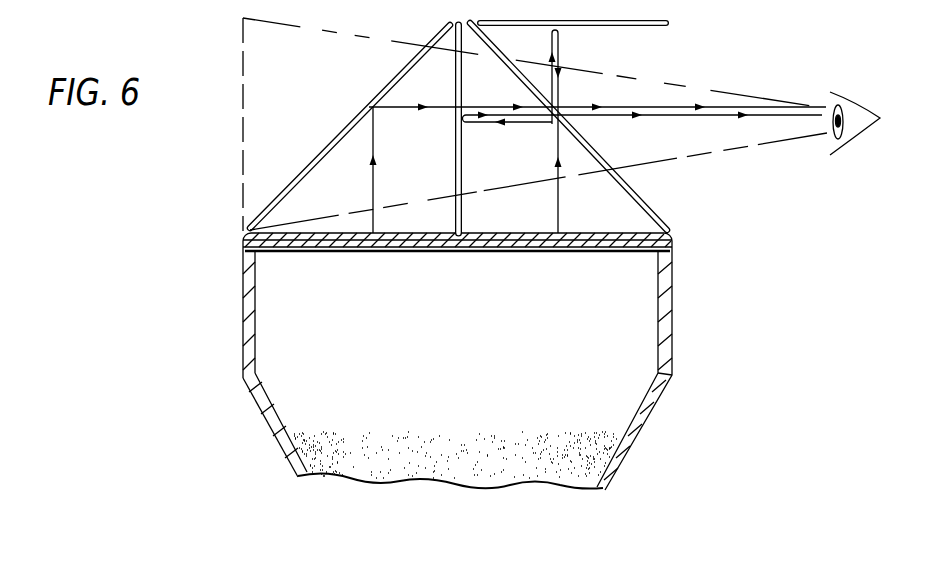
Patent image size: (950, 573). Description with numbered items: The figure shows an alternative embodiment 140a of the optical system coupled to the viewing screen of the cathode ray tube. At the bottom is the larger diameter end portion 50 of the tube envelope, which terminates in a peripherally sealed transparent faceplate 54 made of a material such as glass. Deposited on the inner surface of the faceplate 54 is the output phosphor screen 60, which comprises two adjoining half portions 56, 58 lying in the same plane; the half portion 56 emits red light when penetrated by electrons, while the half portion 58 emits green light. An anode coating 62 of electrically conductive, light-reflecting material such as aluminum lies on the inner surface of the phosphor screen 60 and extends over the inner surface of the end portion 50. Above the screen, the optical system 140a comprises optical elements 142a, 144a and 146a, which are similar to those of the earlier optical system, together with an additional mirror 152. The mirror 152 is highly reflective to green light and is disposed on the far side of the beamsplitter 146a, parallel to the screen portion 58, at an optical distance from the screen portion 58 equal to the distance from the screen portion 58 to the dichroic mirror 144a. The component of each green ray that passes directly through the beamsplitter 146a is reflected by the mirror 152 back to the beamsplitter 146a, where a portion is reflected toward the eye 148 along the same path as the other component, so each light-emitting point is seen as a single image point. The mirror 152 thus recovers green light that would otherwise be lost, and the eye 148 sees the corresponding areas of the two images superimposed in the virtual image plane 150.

The larger diameter end portion 50 is at (670, 326).
The faceplate 54 is at (480, 233).
The half portion 56 is at (346, 240).
The half portion 58 is at (565, 247).
The output phosphor screen 60 is at (445, 260).
The anode coating 62 is at (258, 327).
The optical system 140a is at (684, 178).
The optical element 142a is at (366, 107).
The dichroic mirror 144a is at (457, 80).
The beamsplitter 146a is at (528, 85).
The eye 148 is at (846, 106).
The virtual image plane 150 is at (245, 109).
The mirror 152 is at (645, 28).